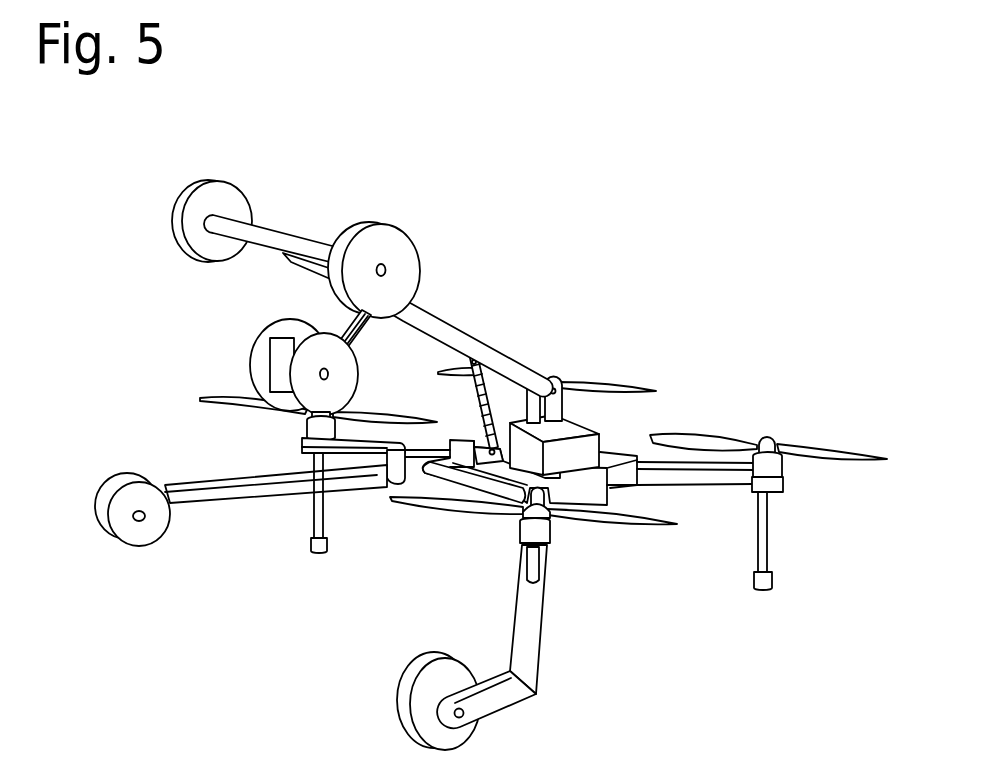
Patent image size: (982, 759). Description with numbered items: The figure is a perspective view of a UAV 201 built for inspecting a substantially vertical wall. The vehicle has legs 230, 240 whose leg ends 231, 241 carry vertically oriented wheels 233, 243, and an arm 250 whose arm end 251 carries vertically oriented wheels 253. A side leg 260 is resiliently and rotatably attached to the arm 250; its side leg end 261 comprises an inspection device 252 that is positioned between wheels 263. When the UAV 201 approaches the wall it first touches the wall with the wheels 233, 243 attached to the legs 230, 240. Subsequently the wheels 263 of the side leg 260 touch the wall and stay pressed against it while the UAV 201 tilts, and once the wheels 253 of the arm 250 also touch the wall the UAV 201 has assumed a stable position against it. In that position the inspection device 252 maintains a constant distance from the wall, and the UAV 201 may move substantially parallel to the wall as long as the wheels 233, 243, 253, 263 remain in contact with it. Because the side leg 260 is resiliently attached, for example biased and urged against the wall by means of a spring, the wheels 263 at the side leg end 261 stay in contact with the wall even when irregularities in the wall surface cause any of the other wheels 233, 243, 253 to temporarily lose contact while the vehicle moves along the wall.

The UAV 201 is at (542, 324).
The leg 230 is at (233, 486).
The leg end 231 is at (140, 535).
The wheel 233 is at (124, 482).
The leg 240 is at (527, 627).
The leg end 241 is at (404, 724).
The wheel 243 is at (455, 733).
The arm 250 is at (446, 332).
The arm end 251 is at (292, 240).
The inspection device 252 is at (285, 342).
The wheel 253 is at (315, 232).
The side leg 260 is at (370, 323).
The side leg end 261 is at (273, 339).
The wheel 263 is at (258, 388).